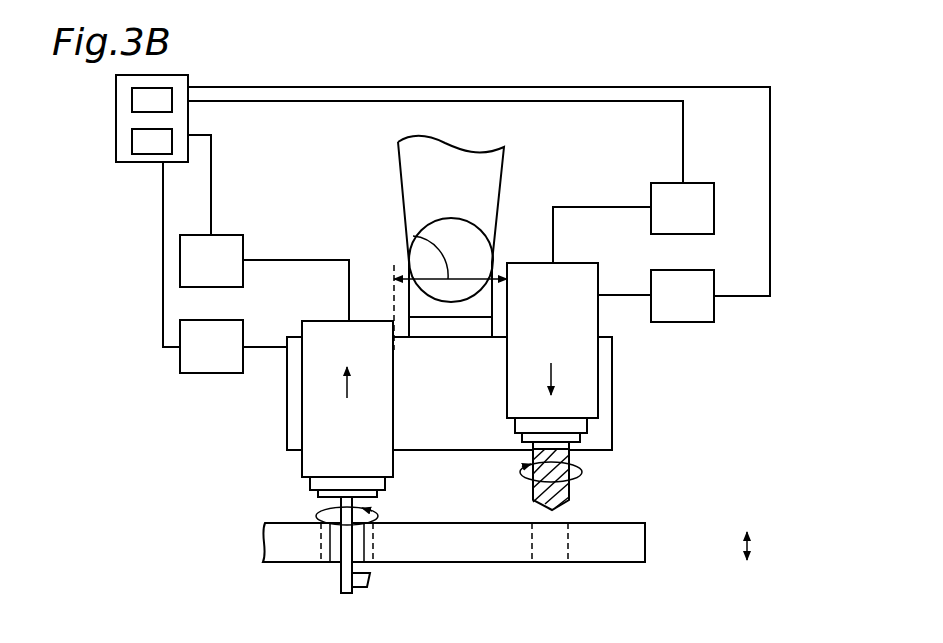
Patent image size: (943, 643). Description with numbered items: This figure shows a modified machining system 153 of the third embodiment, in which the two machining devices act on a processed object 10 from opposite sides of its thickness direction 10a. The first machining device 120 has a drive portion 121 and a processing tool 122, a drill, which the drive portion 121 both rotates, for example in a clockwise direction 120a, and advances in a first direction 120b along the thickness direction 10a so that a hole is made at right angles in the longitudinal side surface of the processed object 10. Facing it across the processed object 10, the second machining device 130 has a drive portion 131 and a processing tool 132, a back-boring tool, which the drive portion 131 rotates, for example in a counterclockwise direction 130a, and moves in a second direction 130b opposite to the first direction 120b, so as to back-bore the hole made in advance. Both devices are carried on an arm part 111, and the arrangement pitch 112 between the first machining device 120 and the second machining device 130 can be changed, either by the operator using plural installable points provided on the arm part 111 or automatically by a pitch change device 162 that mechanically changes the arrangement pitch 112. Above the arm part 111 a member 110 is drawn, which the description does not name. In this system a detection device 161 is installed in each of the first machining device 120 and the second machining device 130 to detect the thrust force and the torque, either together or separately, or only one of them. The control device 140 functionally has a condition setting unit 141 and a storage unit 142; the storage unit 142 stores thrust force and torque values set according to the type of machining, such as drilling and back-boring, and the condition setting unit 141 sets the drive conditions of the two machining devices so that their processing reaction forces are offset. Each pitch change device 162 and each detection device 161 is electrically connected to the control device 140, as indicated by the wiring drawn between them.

The processed object 10 is at (646, 540).
The thickness direction 10a is at (752, 543).
The tool 110 is at (489, 135).
The arm part 111 is at (460, 435).
The arrangement pitch 112 is at (413, 237).
The first machining device 120 is at (607, 412).
The clockwise direction 120a is at (570, 465).
The first direction 120b is at (551, 370).
The drive portion 121 is at (594, 393).
The processing tool 122 is at (569, 497).
The second machining device 130 is at (291, 437).
The counterclockwise direction 130a is at (318, 512).
The second direction 130b is at (347, 393).
The drive portion 131 is at (312, 420).
The processing tool 132 is at (345, 552).
The control device 140 is at (114, 118).
The condition setting unit 141 is at (132, 96).
The storage unit 142 is at (136, 155).
The machining system 153 is at (703, 343).
The detection device 161 is at (229, 235).
The pitch change device 162 is at (229, 320).